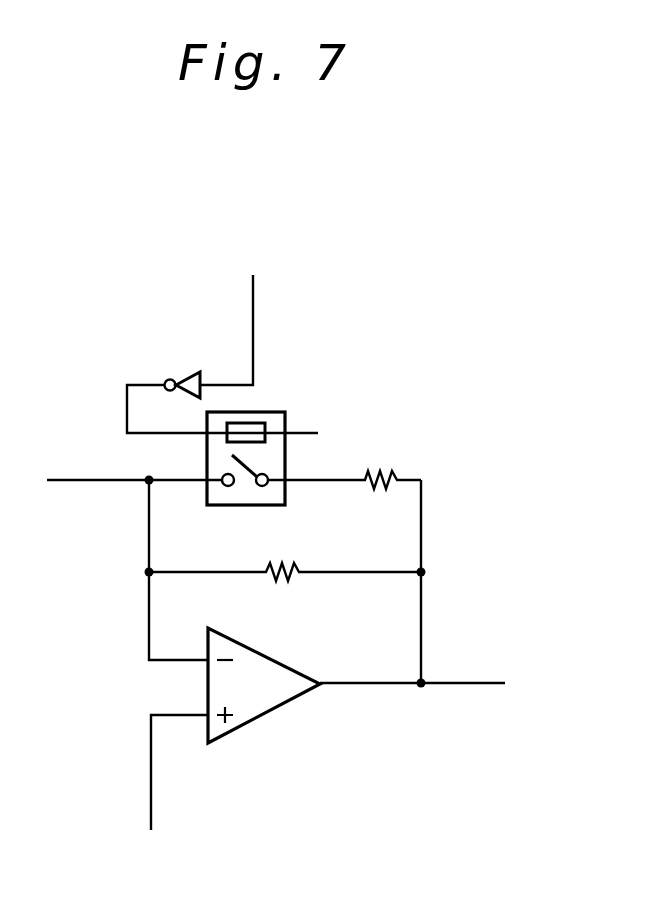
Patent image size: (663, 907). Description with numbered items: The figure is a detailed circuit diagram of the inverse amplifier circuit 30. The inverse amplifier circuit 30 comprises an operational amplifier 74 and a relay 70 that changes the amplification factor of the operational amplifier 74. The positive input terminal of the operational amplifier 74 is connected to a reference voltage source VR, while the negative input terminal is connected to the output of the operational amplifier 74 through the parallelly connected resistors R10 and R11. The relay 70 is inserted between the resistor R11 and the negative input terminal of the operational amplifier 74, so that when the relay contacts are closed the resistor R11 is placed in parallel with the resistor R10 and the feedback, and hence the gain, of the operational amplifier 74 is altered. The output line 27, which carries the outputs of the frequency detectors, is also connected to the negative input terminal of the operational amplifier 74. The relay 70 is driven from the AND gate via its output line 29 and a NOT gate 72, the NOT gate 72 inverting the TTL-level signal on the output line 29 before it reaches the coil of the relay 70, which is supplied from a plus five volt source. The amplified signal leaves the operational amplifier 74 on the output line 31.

The output line 29 is at (254, 299).
The NOT gate 72 is at (197, 378).
The relay 70 is at (280, 411).
The output line 27 is at (72, 479).
The resistor R11 is at (385, 463).
The resistor R10 is at (292, 582).
The operational amplifier 74 is at (273, 710).
The output line 31 is at (472, 681).
The inverse amplifier circuit 30 is at (484, 863).